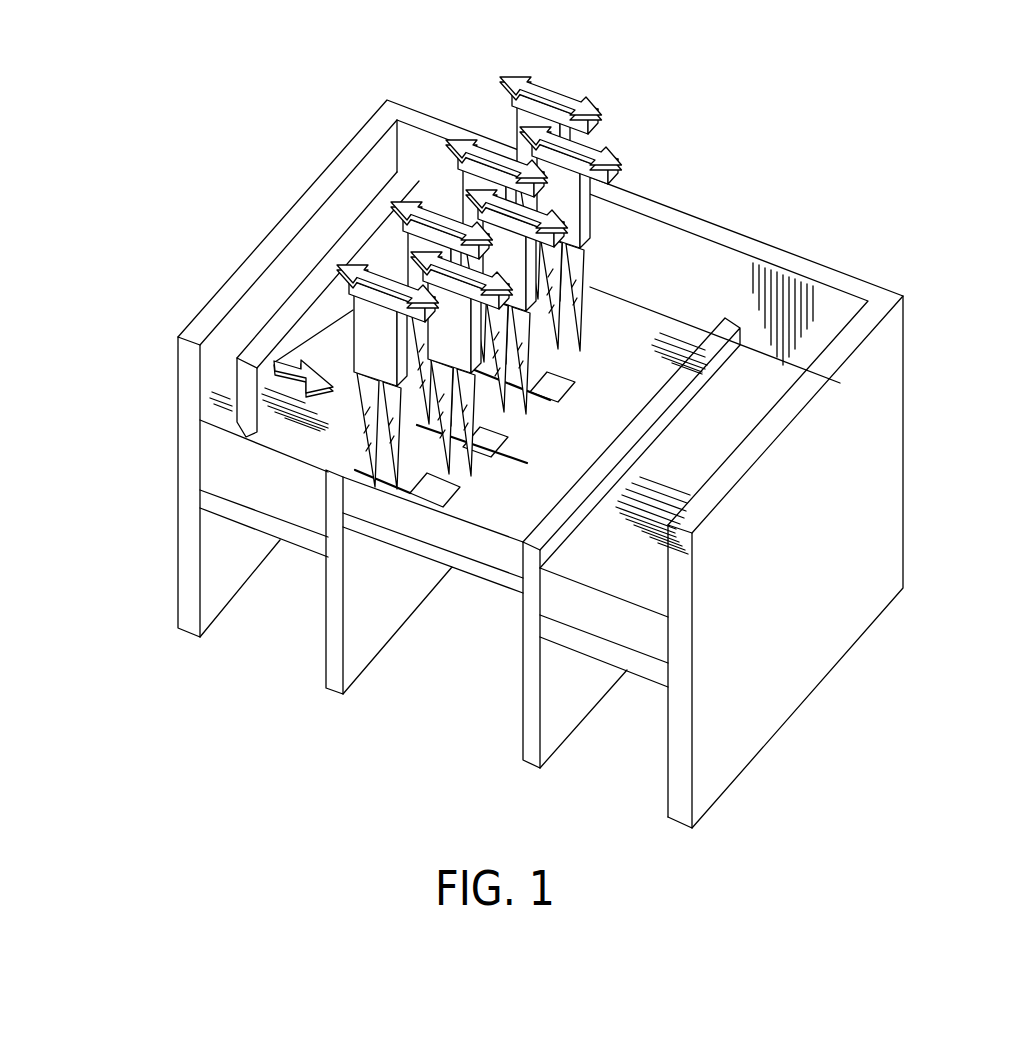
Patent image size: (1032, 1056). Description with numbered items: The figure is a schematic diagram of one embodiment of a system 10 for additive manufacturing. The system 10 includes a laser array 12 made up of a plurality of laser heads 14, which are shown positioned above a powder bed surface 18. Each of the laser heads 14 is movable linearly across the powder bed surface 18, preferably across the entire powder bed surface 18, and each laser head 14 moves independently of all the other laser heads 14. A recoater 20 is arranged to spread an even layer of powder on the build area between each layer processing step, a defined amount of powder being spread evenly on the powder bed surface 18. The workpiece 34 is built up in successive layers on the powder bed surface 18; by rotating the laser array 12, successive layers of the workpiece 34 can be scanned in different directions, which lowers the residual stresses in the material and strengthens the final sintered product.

The system for additive manufacturing 10 is at (474, 414).
The laser array 12 is at (503, 247).
The laser head 14 is at (593, 143).
The powder bed surface 18 is at (639, 404).
The recoater 20 is at (430, 155).
The workpiece 34 is at (626, 308).